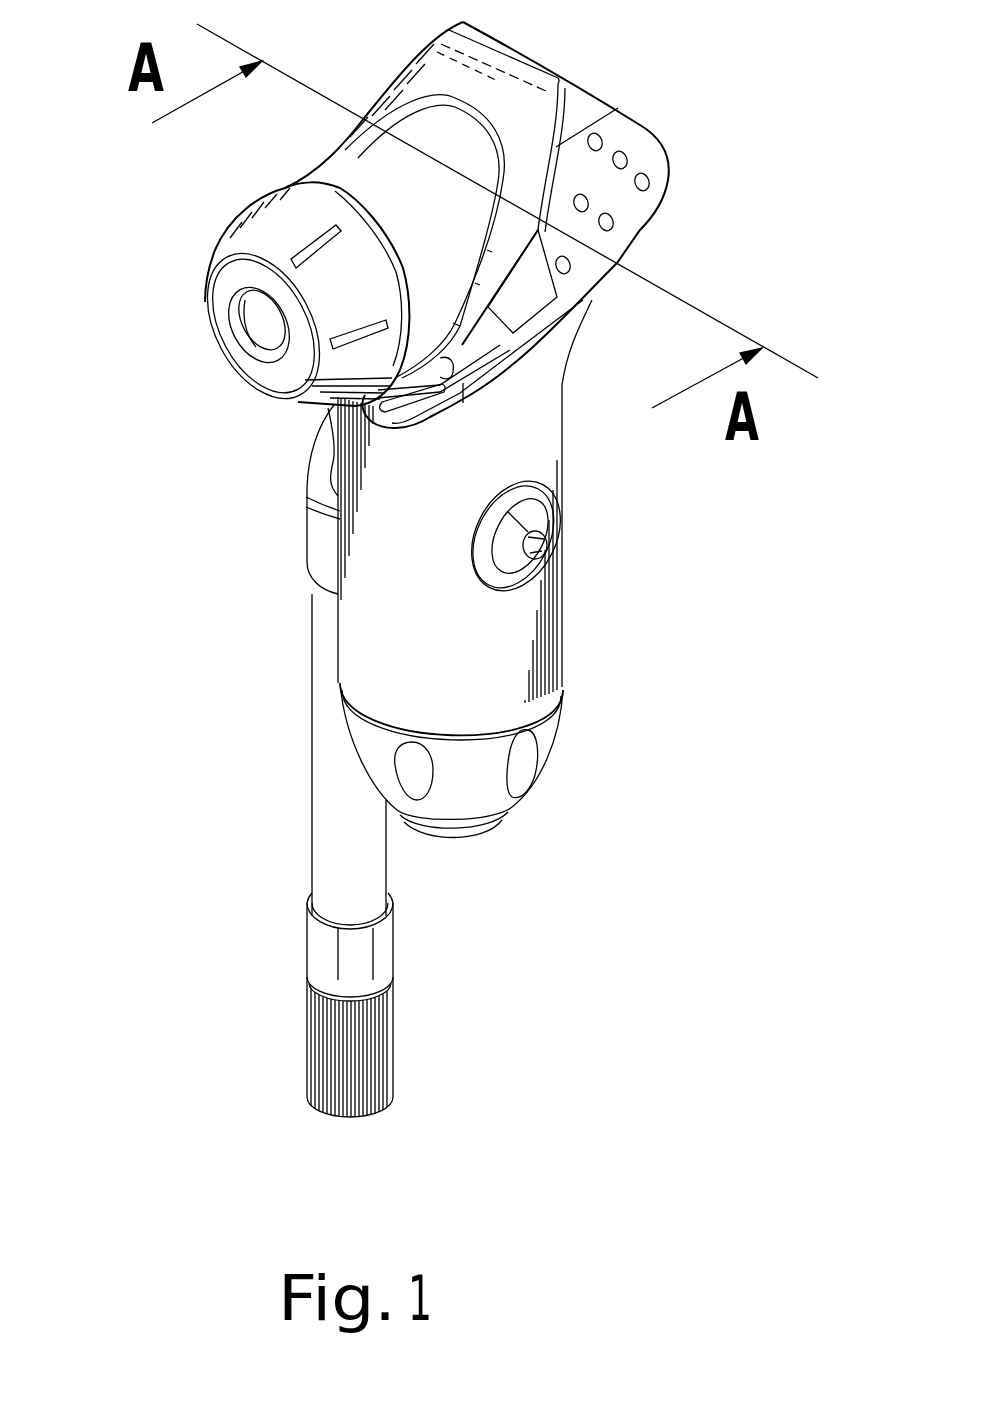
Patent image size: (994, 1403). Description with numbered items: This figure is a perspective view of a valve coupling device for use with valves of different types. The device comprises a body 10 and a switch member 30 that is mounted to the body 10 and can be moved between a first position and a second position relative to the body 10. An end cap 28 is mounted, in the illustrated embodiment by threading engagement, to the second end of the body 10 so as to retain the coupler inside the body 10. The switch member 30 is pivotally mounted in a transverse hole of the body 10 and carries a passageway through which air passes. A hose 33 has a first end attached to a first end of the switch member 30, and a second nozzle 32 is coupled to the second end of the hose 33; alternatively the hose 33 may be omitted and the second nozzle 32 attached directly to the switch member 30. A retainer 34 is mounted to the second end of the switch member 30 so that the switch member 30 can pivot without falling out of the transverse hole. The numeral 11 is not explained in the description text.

The body 10 is at (637, 143).
The gauge dial 11 is at (227, 281).
The end cap 28 is at (463, 777).
The switch member 30 is at (322, 463).
The second nozzle 32 is at (327, 1053).
The hose 33 is at (333, 820).
The retainer 34 is at (512, 533).